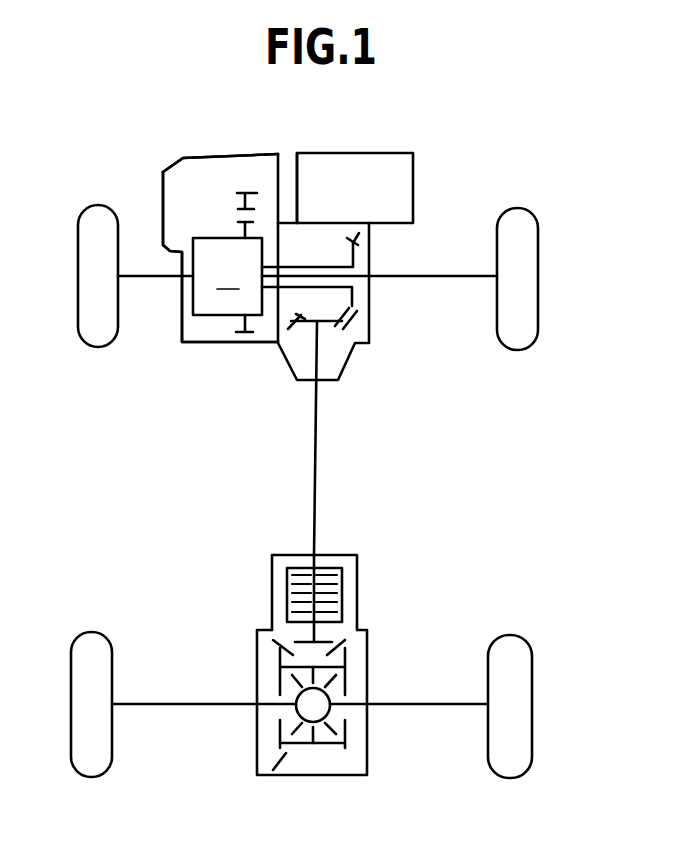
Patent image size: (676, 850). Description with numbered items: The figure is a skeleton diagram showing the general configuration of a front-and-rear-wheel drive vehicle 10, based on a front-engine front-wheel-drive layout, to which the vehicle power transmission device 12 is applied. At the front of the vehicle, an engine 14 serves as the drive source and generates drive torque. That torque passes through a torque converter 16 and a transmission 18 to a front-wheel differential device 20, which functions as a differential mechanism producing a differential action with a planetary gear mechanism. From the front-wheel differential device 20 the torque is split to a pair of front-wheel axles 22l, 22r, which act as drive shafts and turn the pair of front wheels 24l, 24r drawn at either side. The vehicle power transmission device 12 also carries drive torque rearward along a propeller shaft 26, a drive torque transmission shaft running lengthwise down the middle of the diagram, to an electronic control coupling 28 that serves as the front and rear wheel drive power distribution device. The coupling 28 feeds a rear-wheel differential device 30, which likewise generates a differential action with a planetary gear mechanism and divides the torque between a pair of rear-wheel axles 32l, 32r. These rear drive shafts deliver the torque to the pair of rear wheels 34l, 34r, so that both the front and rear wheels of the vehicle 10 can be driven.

The front-and-rear-wheel drive vehicle 10 is at (422, 149).
The vehicle power transmission device 12 is at (150, 187).
The engine 14 is at (403, 186).
The torque converter 16 is at (287, 163).
The transmission 18 is at (214, 162).
The front-wheel differential device 20 is at (227, 262).
The left front-wheel axle 22l is at (143, 280).
The right front-wheel axle 22r is at (434, 281).
The left front wheel 24l is at (88, 303).
The right front wheel 24r is at (527, 316).
The propeller shaft 26 is at (318, 463).
The electronic control coupling 28 is at (342, 570).
The rear-wheel differential device 30 is at (306, 755).
The left rear-wheel axle 32l is at (175, 708).
The right rear-wheel axle 32r is at (420, 709).
The left rear wheel 34l is at (84, 718).
The right rear wheel 34r is at (520, 714).